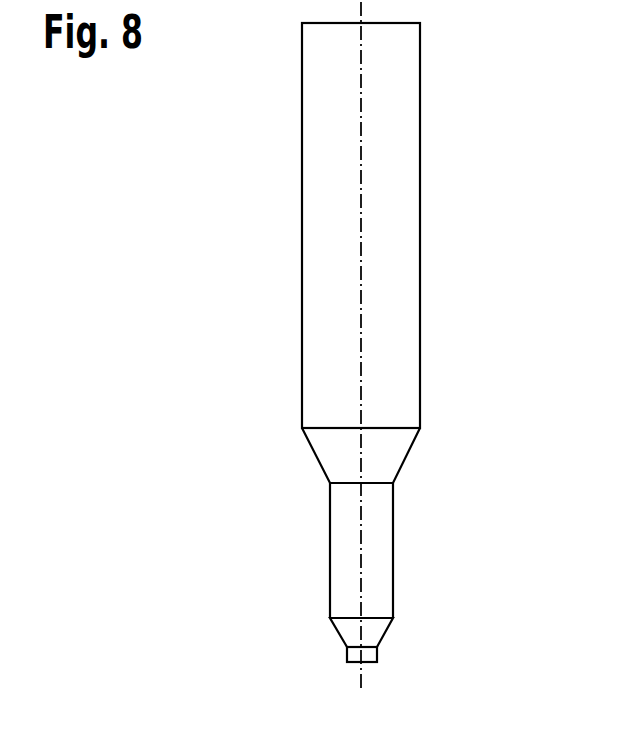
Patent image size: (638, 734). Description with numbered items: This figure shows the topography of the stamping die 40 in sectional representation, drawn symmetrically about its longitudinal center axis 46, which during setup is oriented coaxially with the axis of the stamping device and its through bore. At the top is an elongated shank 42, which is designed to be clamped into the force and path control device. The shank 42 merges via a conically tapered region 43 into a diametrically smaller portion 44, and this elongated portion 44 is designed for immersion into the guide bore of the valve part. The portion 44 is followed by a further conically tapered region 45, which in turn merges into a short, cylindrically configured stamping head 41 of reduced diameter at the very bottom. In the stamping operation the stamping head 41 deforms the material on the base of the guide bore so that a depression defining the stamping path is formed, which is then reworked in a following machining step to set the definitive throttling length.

The stamping die 40 is at (440, 258).
The stamping head 41 is at (351, 662).
The elongated shank 42 is at (302, 286).
The conically tapered region 43 is at (317, 457).
The diametrically smaller portion 44 is at (330, 557).
The further conically tapered region 45 is at (338, 632).
The longitudinal center axis 46 is at (361, 101).